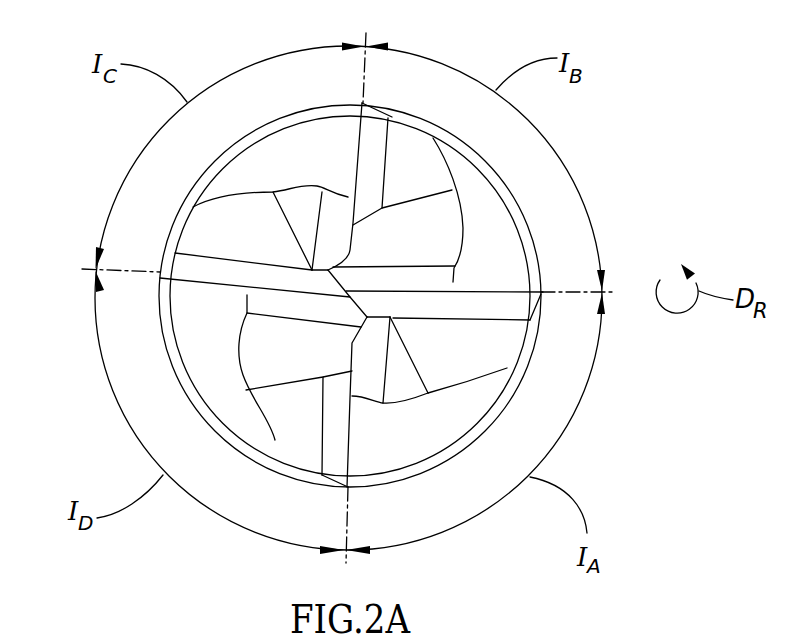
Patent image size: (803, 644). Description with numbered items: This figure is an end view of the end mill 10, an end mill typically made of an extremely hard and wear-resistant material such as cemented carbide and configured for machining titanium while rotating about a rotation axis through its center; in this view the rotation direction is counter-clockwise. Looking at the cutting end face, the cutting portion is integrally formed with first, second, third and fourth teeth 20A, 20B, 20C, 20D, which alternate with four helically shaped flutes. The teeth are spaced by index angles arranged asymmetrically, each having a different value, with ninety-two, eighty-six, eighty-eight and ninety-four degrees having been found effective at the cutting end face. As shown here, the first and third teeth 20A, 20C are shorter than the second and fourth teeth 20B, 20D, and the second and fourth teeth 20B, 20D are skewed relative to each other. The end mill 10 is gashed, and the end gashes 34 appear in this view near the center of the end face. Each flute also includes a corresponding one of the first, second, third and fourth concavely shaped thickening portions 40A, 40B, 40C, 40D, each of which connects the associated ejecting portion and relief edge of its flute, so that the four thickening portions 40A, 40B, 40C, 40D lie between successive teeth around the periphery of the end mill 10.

The end mill 10 is at (613, 73).
The first tooth 20A is at (342, 490).
The second tooth 20B is at (545, 298).
The third tooth 20C is at (375, 100).
The fourth tooth 20D is at (160, 275).
The end gash 34 is at (327, 213).
The first concavely shaped thickening portion 40A is at (507, 368).
The second concavely shaped thickening portion 40B is at (433, 138).
The third concavely shaped thickening portion 40C is at (193, 207).
The fourth concavely shaped thickening portion 40D is at (275, 440).